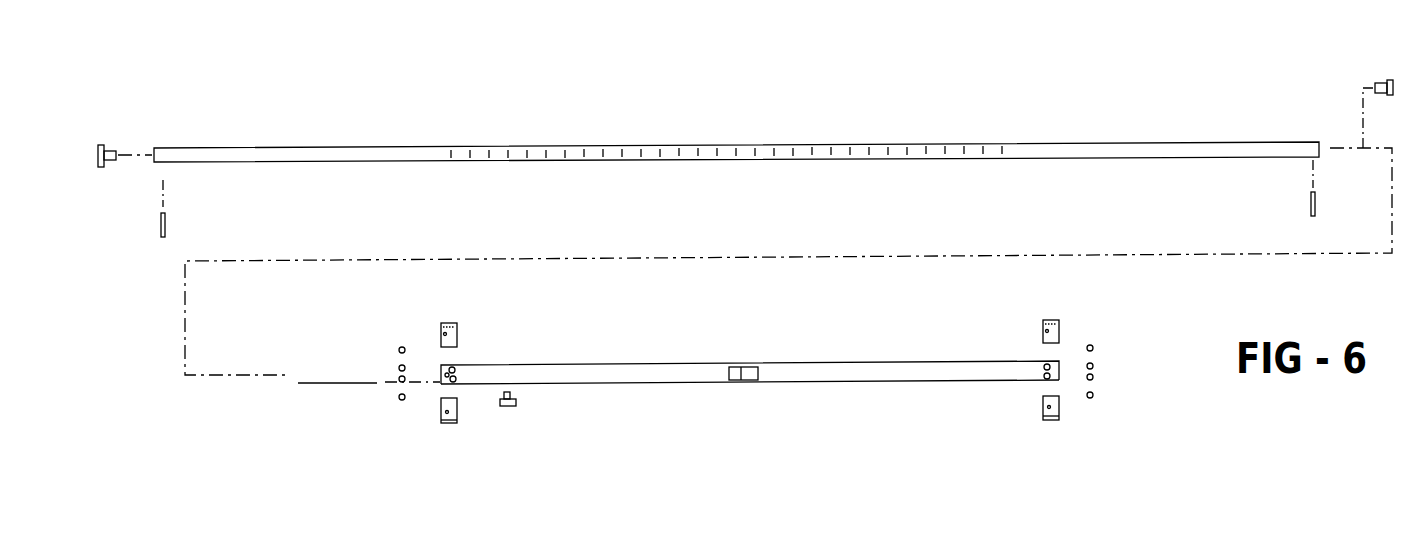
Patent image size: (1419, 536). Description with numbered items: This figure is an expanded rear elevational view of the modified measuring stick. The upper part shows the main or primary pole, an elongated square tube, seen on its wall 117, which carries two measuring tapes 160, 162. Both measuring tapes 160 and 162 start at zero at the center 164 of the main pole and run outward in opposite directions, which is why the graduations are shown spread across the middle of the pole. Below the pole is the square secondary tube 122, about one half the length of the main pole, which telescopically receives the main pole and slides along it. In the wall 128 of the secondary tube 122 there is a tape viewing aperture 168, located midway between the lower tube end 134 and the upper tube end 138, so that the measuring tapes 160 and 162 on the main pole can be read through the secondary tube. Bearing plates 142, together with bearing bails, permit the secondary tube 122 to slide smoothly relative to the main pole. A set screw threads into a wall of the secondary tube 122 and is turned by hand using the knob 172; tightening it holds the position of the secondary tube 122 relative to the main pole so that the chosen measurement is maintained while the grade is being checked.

The wall 117 is at (630, 146).
The measuring tape 160 is at (527, 153).
The center 164 is at (737, 152).
The measuring tape 162 is at (928, 152).
The secondary tube 122 is at (667, 362).
The wall 128 is at (961, 373).
The tape viewing aperture 168 is at (741, 366).
The upper tube end 138 is at (442, 370).
The bearing plate 142 is at (457, 335).
The lower tube end 134 is at (1060, 373).
The knob 172 is at (515, 402).